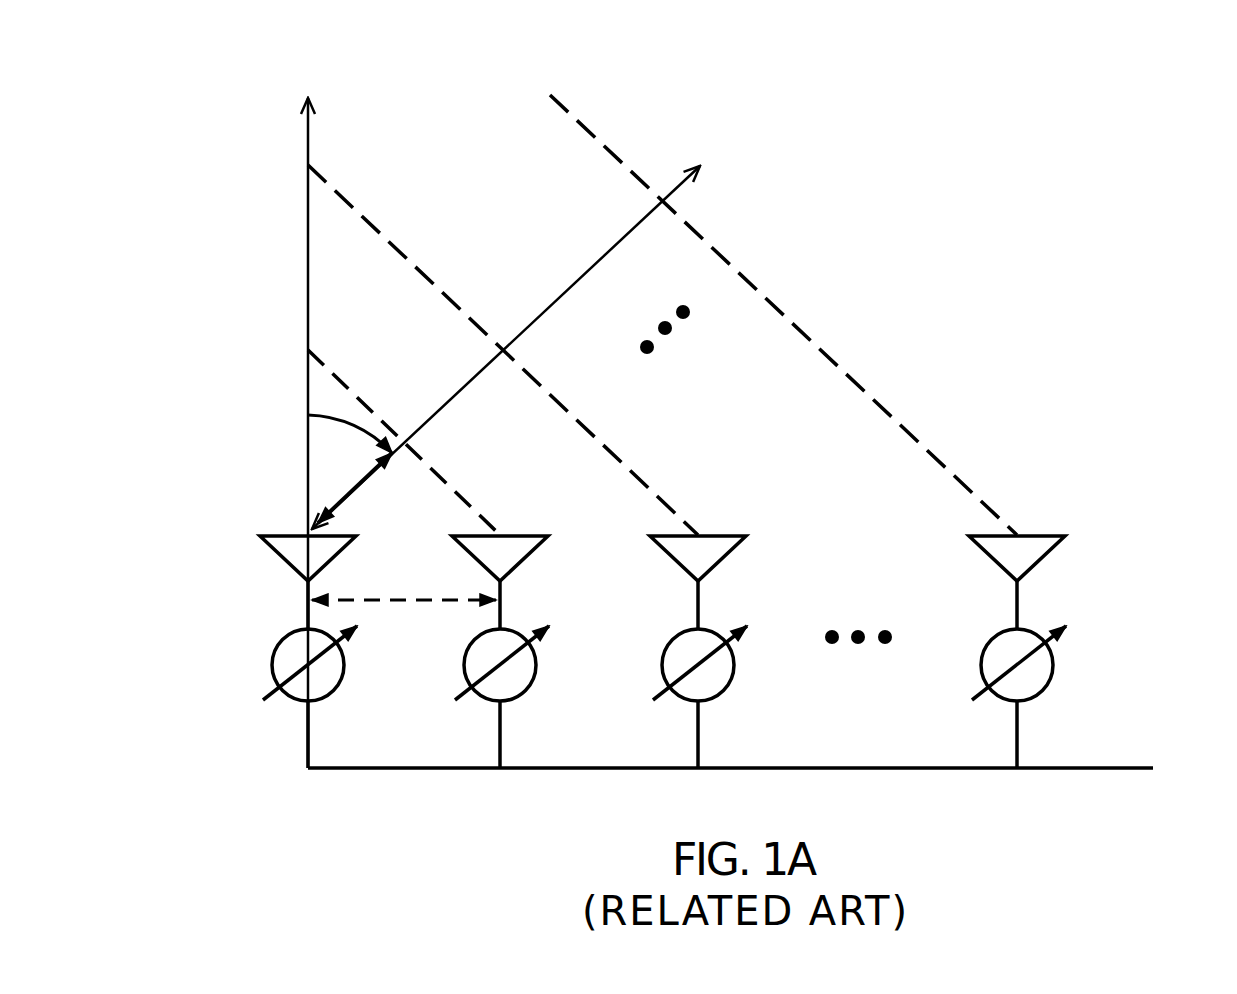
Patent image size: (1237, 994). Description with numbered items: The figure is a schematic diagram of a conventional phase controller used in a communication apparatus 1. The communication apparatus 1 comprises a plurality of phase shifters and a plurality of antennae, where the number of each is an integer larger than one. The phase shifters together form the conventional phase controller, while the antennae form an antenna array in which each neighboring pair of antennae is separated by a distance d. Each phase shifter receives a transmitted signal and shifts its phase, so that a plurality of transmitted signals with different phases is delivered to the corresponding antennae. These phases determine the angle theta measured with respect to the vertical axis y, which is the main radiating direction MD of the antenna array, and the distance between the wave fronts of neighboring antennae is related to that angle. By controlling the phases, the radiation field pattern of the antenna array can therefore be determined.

The communication apparatus 1 is at (242, 48).
The main radiating direction MD is at (534, 323).